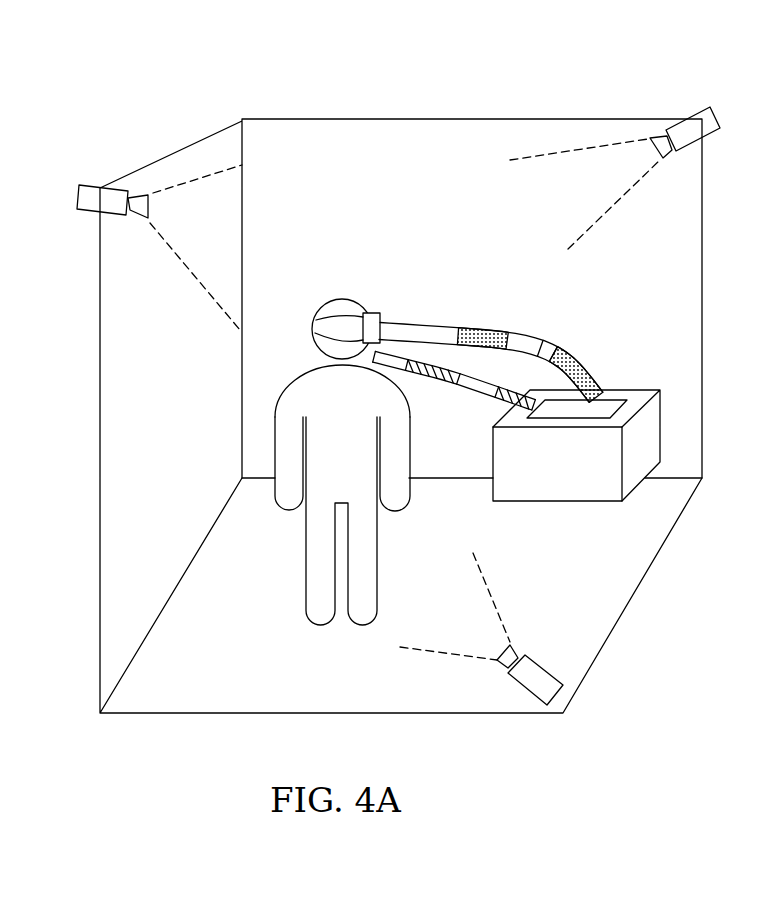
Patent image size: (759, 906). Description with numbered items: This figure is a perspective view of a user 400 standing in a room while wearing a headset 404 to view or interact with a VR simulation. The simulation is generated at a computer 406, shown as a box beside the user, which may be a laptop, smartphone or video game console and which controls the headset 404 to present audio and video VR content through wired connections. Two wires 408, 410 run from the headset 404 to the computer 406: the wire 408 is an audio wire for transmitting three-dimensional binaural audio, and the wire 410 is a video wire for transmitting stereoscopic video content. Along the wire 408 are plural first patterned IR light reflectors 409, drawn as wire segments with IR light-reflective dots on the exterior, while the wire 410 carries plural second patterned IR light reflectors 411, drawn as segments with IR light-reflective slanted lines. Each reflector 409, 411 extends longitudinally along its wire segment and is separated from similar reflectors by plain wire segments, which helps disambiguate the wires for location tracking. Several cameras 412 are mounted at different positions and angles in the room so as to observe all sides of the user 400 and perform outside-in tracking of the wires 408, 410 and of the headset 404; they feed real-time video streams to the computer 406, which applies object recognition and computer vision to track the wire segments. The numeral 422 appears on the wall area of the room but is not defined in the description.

The user 400 is at (285, 606).
The headset 404 is at (316, 321).
The computer 406 is at (625, 392).
The wire 408 is at (538, 338).
The first patterned IR light reflectors 409 is at (478, 328).
The wire 410 is at (477, 392).
The second patterned IR light reflectors 411 is at (433, 377).
The cameras 412 is at (96, 186).
The room 422 is at (401, 416).